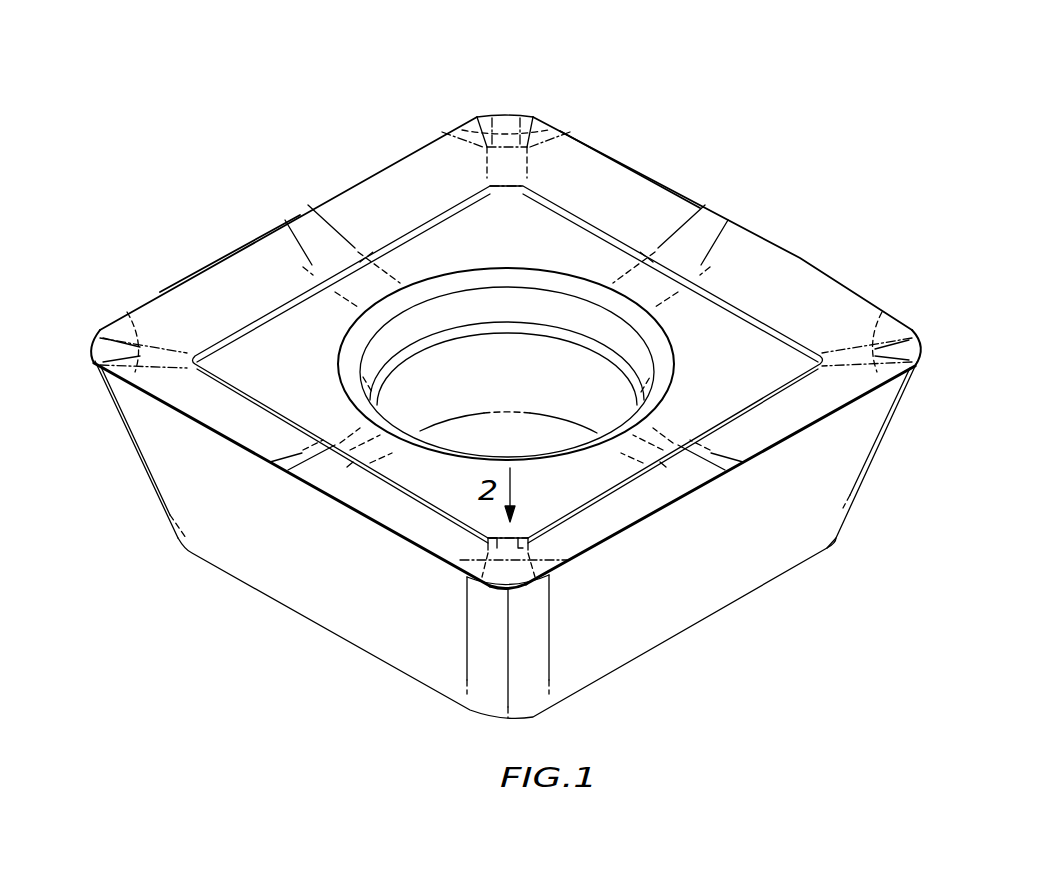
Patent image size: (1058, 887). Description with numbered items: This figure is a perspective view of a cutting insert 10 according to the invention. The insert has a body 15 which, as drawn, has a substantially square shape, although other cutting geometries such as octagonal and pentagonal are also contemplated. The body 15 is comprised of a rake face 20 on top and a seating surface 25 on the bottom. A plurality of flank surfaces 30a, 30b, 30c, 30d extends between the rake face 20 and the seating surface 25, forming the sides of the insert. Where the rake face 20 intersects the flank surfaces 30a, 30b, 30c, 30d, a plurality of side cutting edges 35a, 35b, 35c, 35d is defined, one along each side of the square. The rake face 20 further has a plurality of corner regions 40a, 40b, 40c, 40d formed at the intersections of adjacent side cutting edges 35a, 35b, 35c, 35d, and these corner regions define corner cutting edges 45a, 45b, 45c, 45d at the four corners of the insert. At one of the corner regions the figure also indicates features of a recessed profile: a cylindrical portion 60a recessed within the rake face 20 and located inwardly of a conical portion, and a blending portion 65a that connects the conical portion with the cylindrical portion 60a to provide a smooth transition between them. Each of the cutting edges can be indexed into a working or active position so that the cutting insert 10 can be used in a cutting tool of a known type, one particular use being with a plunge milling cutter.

The cutting insert 10 is at (221, 139).
The body 15 is at (722, 158).
The rake face 20 is at (752, 247).
The seating surface 25 is at (787, 597).
The flank surface 30a is at (675, 620).
The flank surface 30b is at (327, 615).
The flank surface 30c is at (235, 250).
The flank surface 30d is at (592, 147).
The side cutting edge 35a is at (688, 493).
The side cutting edge 35b is at (340, 500).
The side cutting edge 35c is at (338, 190).
The side cutting edge 35d is at (656, 178).
The corner region 40a is at (464, 738).
The corner region 40b is at (78, 332).
The corner region 40c is at (477, 85).
The corner region 40d is at (930, 325).
The corner cutting edge 45a is at (490, 590).
The corner cutting edge 45b is at (91, 348).
The corner cutting edge 45c is at (505, 116).
The corner cutting edge 45d is at (927, 352).
The cylindrical portion 60a is at (490, 545).
The blending portion 65a is at (530, 556).